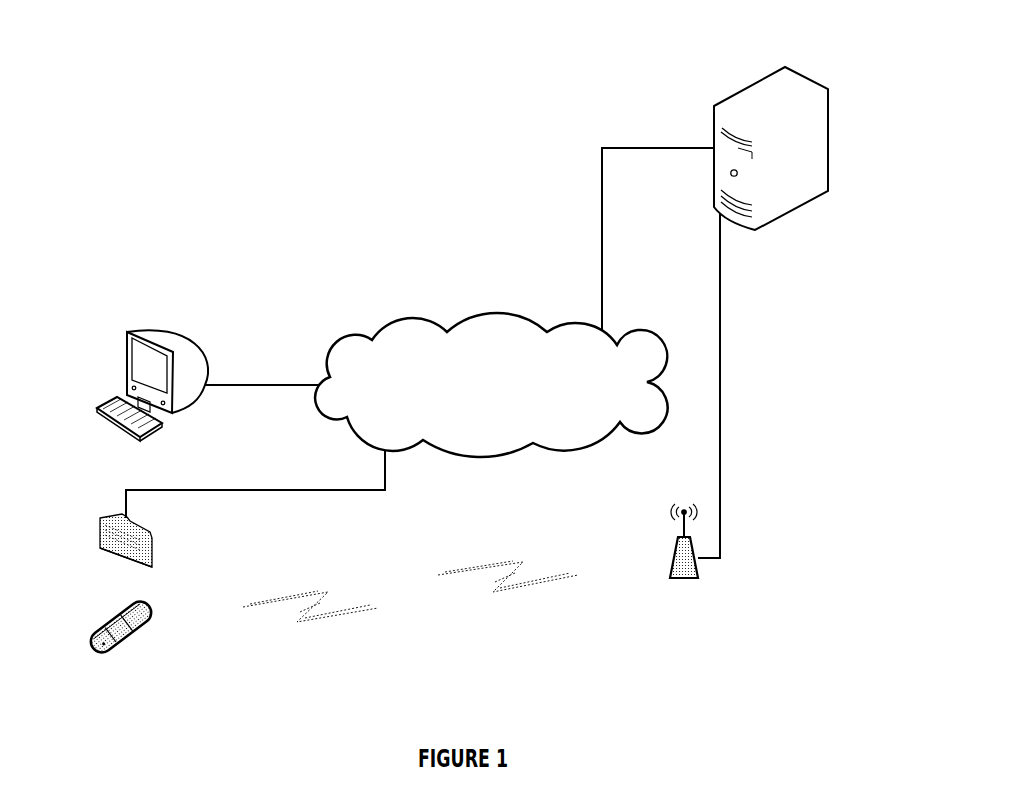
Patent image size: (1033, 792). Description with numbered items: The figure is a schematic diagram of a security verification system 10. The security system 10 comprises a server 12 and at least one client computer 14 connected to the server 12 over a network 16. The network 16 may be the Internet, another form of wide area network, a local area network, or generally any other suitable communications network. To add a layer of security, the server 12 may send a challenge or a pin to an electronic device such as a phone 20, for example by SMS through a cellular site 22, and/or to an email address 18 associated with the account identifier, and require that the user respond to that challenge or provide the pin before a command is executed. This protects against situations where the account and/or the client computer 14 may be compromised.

The security verification system 10 is at (366, 171).
The server 12 is at (790, 67).
The client computer 14 is at (178, 338).
The network 16 is at (492, 312).
The email address 18 is at (103, 518).
The phone 20 is at (103, 630).
The cellular site 22 is at (687, 580).